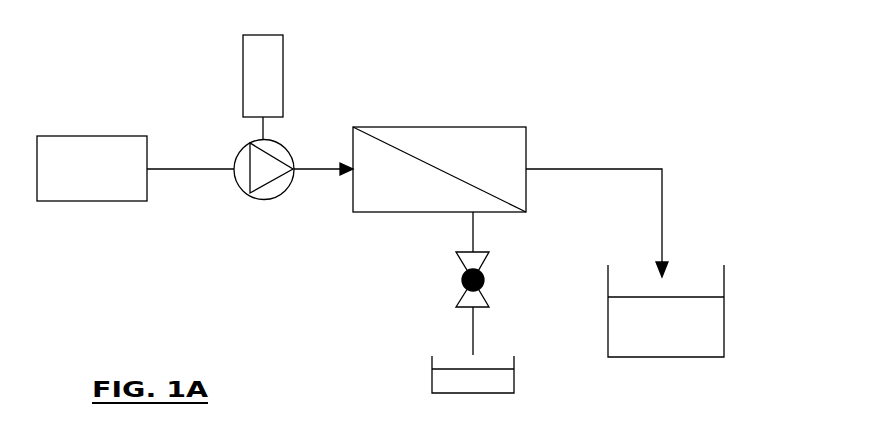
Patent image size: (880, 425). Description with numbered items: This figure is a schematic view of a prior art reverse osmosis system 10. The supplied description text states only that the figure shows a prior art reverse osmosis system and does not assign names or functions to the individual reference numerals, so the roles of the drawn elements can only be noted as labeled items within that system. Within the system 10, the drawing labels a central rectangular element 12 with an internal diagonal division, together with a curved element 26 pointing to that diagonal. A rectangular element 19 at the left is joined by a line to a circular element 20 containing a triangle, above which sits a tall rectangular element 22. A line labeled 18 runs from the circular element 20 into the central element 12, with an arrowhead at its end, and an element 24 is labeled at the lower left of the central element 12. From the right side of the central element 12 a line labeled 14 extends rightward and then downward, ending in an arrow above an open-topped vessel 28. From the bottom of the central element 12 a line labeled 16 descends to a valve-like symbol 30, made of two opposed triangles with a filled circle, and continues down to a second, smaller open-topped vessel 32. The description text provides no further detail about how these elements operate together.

The system 10 is at (134, 58).
The membrane module 12 is at (400, 127).
The permeate outlet line 14 is at (590, 169).
The retentate outlet line 16 is at (474, 225).
The feed line 18 is at (314, 166).
The feed source 19 is at (48, 136).
The pump 20 is at (237, 150).
The pump control/power unit 22 is at (284, 38).
The feed side 24 is at (368, 212).
The membrane 26 is at (456, 173).
The permeate collection tank 28 is at (724, 322).
The valve 30 is at (462, 280).
The retentate collection tank 32 is at (514, 381).